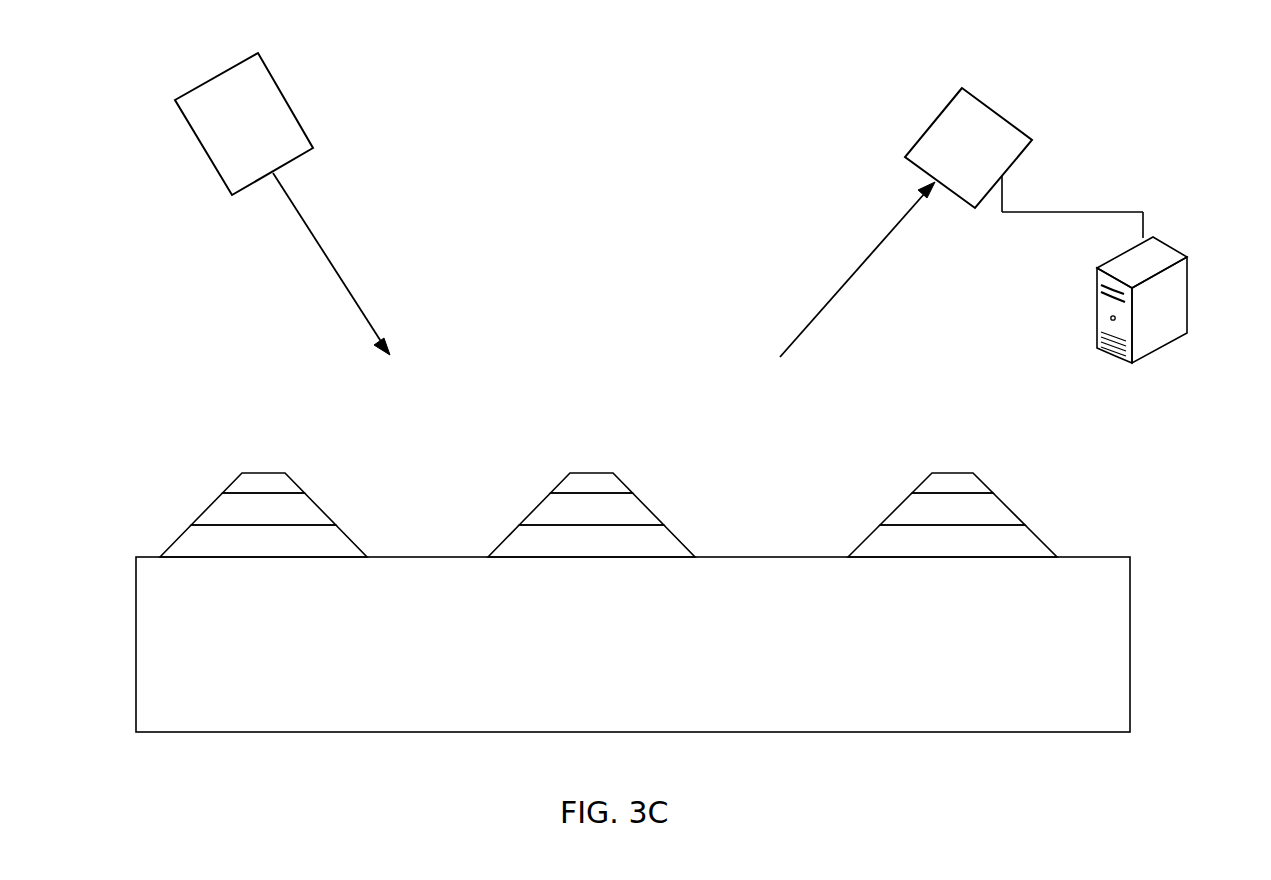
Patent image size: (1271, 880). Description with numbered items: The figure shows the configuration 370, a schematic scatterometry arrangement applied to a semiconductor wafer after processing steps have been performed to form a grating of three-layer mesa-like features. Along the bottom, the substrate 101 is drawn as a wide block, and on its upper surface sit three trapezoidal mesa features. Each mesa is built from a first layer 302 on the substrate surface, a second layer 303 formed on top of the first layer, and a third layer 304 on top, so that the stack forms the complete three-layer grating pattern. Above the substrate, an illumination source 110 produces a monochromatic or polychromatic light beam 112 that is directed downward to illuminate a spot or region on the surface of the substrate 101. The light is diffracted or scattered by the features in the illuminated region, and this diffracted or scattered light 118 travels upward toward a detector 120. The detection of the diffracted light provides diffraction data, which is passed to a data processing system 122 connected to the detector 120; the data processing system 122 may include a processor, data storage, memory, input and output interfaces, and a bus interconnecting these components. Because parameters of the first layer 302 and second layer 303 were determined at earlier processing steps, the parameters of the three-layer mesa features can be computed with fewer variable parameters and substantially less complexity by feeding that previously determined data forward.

The substrate 101 is at (633, 644).
The illumination source 110 is at (244, 124).
The light beam 112 is at (343, 264).
The diffracted or scattered light 118 is at (857, 269).
The detector 120 is at (1024, 163).
The data processing system 122 is at (1170, 300).
The first layer 302 is at (608, 541).
The second layer 303 is at (608, 509).
The third layer 304 is at (608, 482).
The configuration 370 is at (1034, 820).